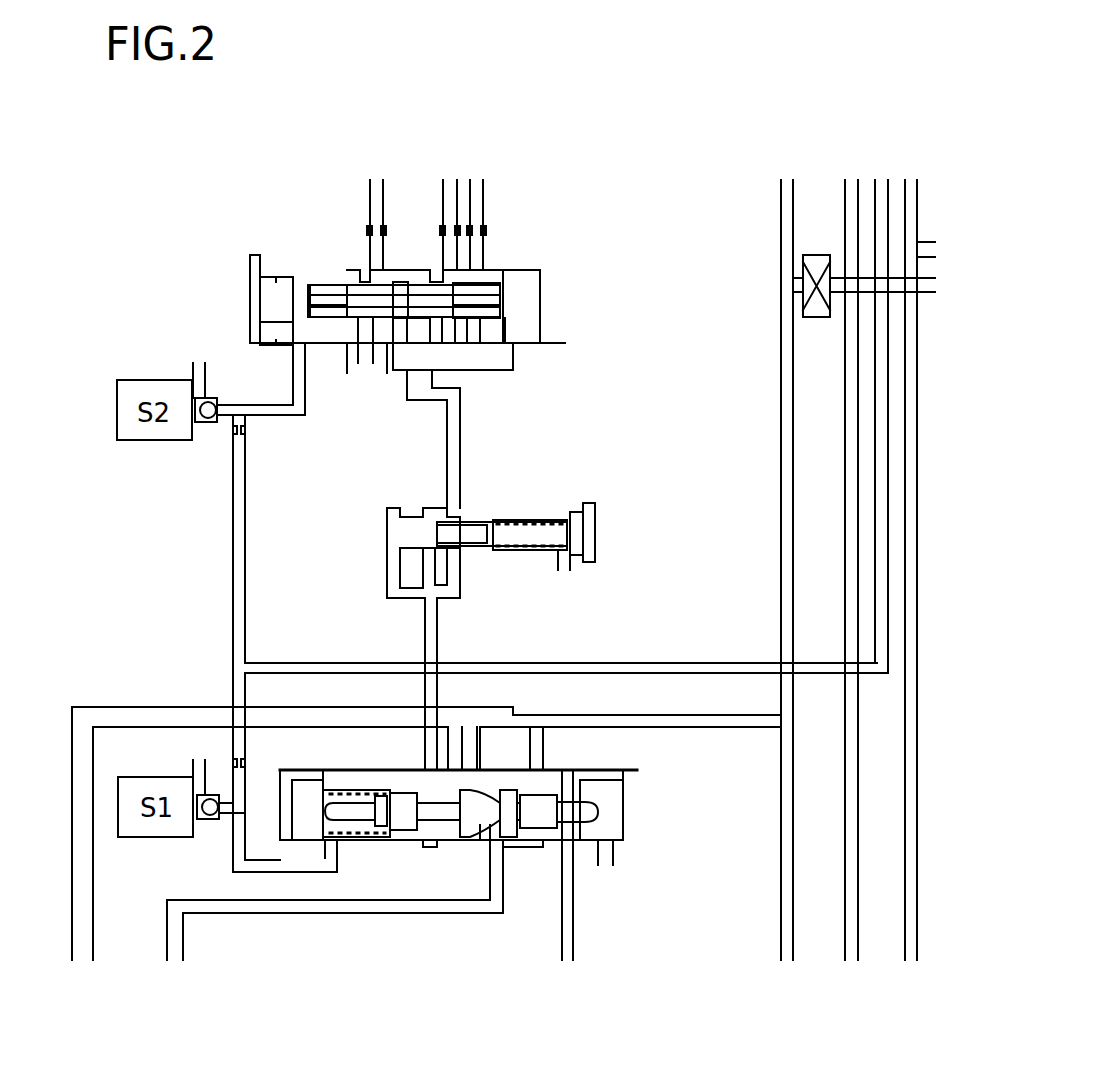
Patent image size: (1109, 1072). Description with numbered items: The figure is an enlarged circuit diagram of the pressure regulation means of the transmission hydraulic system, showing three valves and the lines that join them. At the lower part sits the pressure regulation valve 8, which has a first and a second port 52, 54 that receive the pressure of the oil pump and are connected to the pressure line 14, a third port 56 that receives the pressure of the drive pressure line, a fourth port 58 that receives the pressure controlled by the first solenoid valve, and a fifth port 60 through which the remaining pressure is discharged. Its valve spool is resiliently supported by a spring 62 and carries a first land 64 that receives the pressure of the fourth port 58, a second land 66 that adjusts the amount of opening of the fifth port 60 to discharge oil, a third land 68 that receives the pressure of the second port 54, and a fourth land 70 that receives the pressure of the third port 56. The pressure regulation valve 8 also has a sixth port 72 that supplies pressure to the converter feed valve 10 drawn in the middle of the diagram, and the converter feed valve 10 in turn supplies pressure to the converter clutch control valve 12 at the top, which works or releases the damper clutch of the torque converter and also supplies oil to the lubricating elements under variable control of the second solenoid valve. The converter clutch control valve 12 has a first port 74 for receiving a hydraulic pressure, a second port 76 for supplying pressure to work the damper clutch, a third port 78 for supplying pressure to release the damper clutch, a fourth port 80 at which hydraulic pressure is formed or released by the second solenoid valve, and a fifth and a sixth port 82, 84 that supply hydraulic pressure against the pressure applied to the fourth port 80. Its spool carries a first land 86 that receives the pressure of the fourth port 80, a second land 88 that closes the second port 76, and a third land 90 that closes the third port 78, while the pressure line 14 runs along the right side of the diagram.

The pressure regulation valve 8 is at (502, 816).
The converter feed valve 10 is at (607, 533).
The converter clutch control valve 12 is at (565, 298).
The pressure line 14 is at (781, 376).
The first port 52 is at (462, 773).
The second port 54 is at (538, 783).
The third port 56 is at (572, 865).
The fourth port 58 is at (328, 845).
The fifth port 60 is at (497, 845).
The spring 62 is at (345, 790).
The first land 64 is at (405, 800).
The second land 66 is at (488, 817).
The third land 68 is at (508, 790).
The fourth land 70 is at (548, 805).
The sixth port 72 is at (430, 787).
The first port 74 is at (420, 323).
The second port 76 is at (448, 272).
The third port 78 is at (377, 265).
The fourth port 80 is at (300, 330).
The fifth port 82 is at (390, 347).
The sixth port 84 is at (512, 352).
The first land 86 is at (327, 292).
The second land 88 is at (487, 292).
The third land 90 is at (400, 282).